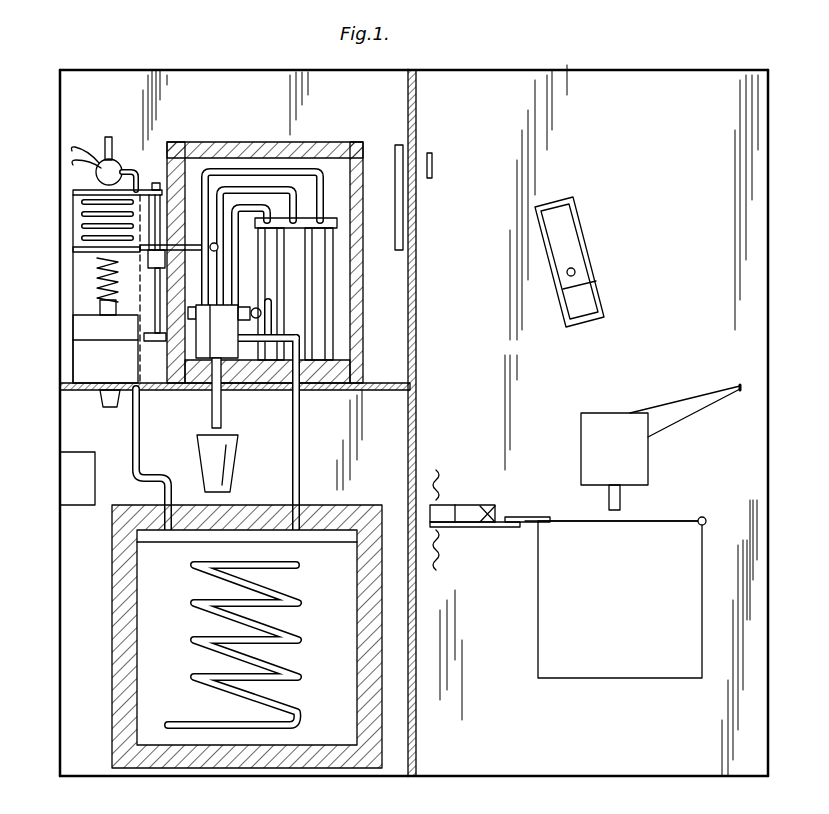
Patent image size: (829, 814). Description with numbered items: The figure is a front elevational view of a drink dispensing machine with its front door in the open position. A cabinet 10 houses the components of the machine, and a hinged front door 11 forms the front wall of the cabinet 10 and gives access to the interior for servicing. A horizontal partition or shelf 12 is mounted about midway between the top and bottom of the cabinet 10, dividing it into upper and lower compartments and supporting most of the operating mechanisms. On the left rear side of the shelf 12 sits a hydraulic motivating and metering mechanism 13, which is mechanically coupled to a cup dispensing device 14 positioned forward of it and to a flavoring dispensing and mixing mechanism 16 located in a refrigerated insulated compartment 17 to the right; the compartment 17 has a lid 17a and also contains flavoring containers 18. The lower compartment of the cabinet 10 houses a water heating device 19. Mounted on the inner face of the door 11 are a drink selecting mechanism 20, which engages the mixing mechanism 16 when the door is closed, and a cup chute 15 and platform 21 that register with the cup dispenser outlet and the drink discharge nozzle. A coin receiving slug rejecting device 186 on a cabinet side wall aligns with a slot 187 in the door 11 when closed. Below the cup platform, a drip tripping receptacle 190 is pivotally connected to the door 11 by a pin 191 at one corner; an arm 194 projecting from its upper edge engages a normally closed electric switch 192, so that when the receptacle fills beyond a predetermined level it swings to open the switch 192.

The cabinet 10 is at (237, 63).
The front door 11 is at (603, 63).
The partition shelf 12 is at (331, 391).
The hydraulic motivating and metering mechanism 13 is at (84, 233).
The cup dispensing device 14 is at (90, 344).
The cup chute 15 is at (660, 398).
The flavoring dispensing and mixing mechanism 16 is at (209, 350).
The refrigerated insulated compartment 17 is at (332, 158).
The lid 17a is at (250, 126).
The flavoring containers 18 is at (280, 298).
The water heating device 19 is at (168, 745).
The drink selecting mechanism 20 is at (565, 228).
The platform 21 is at (603, 484).
The coin receiving slug rejecting device 186 is at (404, 215).
The slot 187 is at (434, 160).
The drip tripping receptacle 190 is at (633, 660).
The pin 191 is at (727, 502).
The electric switch 192 is at (470, 518).
The arm 194 is at (519, 517).